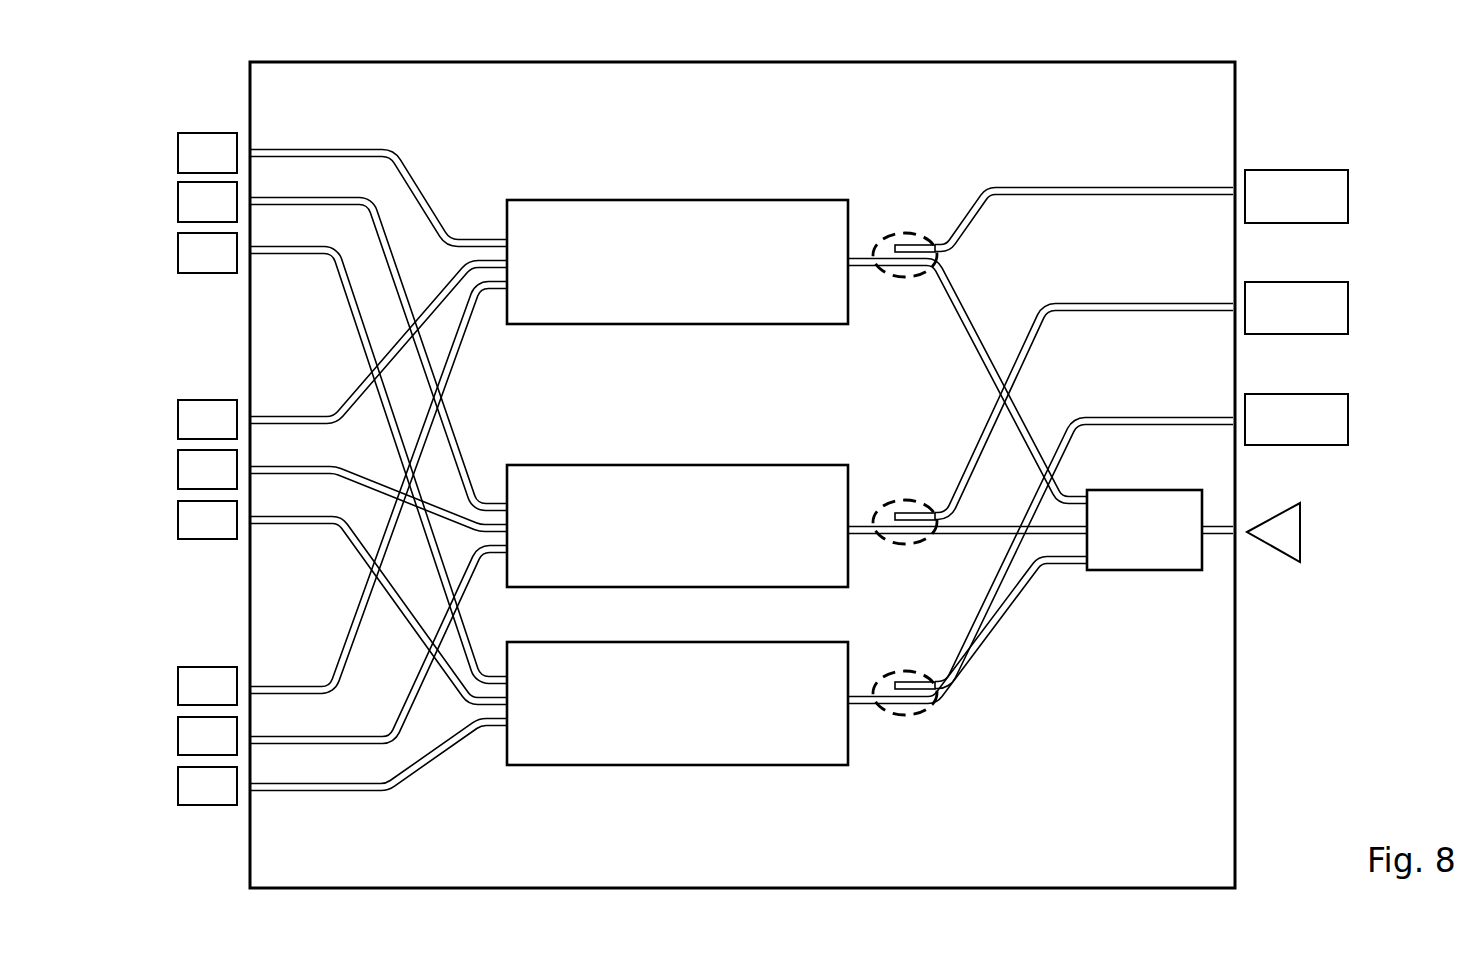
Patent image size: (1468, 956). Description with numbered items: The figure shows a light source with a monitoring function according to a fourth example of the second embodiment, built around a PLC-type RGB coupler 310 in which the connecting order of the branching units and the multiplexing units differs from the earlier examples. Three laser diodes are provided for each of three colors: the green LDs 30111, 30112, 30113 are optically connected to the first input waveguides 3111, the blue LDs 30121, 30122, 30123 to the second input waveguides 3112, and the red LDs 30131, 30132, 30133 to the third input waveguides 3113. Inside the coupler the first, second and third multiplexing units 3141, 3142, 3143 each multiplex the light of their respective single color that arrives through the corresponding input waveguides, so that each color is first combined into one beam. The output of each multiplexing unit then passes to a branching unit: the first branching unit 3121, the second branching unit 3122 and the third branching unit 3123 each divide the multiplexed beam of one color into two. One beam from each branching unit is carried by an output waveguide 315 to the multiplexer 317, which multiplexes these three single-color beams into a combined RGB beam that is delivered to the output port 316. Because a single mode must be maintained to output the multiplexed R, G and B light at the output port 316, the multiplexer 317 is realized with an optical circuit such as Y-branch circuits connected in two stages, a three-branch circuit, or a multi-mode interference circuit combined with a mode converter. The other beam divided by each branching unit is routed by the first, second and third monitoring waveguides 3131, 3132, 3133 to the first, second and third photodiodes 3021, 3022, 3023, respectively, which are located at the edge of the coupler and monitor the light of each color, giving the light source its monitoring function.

The first LD (green) 30111 is at (178, 153).
The first LD (green) 30112 is at (178, 202).
The first LD (green) 30113 is at (178, 253).
The second LD (blue) 30121 is at (178, 419).
The second LD (blue) 30122 is at (178, 469).
The second LD (blue) 30123 is at (178, 520).
The third LD (red) 30131 is at (178, 686).
The third LD (red) 30132 is at (178, 736).
The third LD (red) 30133 is at (178, 786).
The first PD 3021 is at (1348, 197).
The second PD 3022 is at (1348, 308).
The third PD 3023 is at (1348, 419).
The RGB coupler 310 is at (1237, 78).
The first input waveguide 3111 is at (287, 155).
The second input waveguide 3112 is at (287, 422).
The third input waveguide 3113 is at (287, 785).
The first branching unit 3121 is at (903, 232).
The second branching unit 3122 is at (903, 499).
The third branching unit 3123 is at (903, 670).
The first monitoring waveguide 3131 is at (1143, 187).
The second monitoring waveguide 3132 is at (1143, 303).
The third monitoring waveguide 3133 is at (1143, 417).
The first multiplexing unit 3141 is at (792, 200).
The second multiplexing unit 3142 is at (792, 465).
The third multiplexing unit 3143 is at (792, 642).
The output waveguide 315 is at (1060, 498).
The output port 316 is at (1300, 529).
The multiplexer 317 is at (1143, 490).